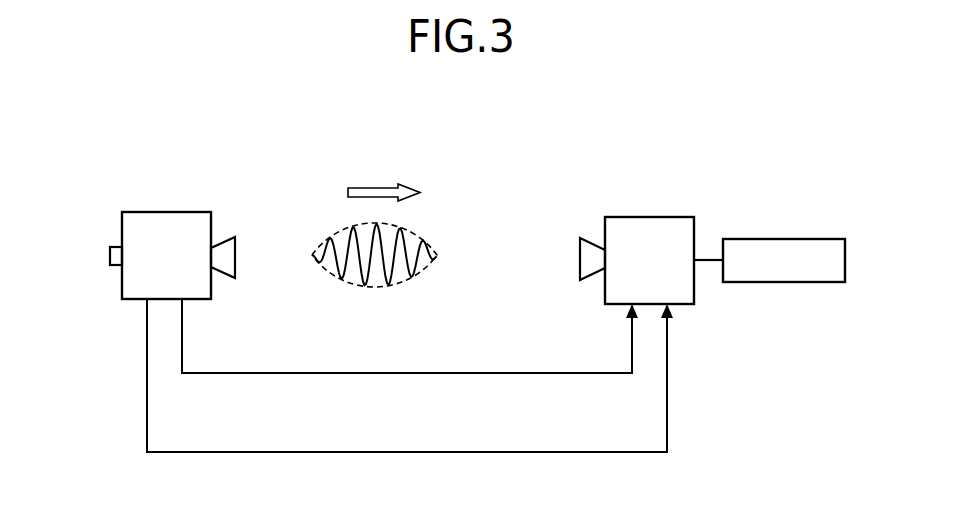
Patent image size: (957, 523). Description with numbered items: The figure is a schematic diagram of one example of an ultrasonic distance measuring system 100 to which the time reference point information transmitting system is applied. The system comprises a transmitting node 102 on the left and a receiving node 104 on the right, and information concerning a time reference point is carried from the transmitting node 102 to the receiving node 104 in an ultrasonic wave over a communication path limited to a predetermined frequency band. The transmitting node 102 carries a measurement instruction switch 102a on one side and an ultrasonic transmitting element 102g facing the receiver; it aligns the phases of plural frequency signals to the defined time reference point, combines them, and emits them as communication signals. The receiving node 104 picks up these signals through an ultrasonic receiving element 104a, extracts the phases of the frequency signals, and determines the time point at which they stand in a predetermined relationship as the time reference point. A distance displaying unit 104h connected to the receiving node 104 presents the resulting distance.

The ultrasonic distance measuring system 100 is at (550, 121).
The transmitting node 102 is at (146, 212).
The measurement instruction switch 102a is at (120, 248).
The ultrasonic transmitting element 102g is at (222, 237).
The receiving node 104 is at (655, 215).
The ultrasonic receiving element 104a is at (592, 238).
The distance displaying unit 104h is at (787, 238).